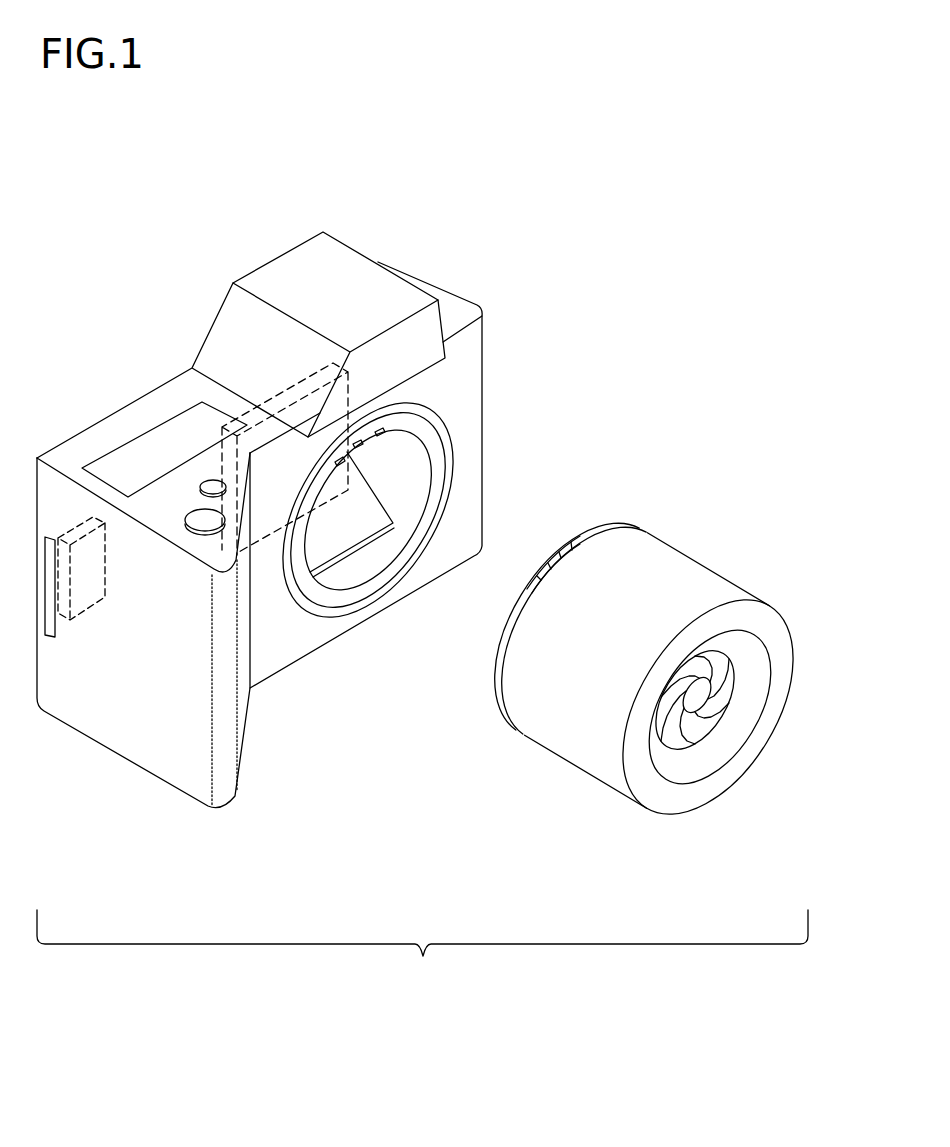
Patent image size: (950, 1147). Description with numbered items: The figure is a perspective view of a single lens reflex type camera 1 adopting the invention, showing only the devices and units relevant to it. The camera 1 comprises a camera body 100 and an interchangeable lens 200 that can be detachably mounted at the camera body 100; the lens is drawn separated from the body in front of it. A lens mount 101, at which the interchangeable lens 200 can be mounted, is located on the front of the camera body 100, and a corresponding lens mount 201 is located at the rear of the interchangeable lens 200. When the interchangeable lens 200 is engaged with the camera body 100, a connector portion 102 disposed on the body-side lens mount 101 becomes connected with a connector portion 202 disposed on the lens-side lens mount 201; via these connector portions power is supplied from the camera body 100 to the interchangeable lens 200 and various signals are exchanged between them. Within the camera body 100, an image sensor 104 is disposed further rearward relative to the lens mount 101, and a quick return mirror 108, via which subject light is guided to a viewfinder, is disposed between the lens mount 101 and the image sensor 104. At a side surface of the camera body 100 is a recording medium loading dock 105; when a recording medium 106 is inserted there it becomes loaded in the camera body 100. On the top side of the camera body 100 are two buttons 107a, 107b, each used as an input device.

The single lens reflex type camera 1 is at (422, 953).
The camera body 100 is at (437, 282).
The lens mount 101 is at (447, 432).
The connector portion 102 is at (404, 432).
The image sensor 104 is at (318, 383).
The recording medium loading dock 105 is at (57, 638).
The recording medium 106 is at (92, 605).
The mode dial 107a is at (198, 515).
The shutter release button 107b is at (212, 483).
The quick return mirror 108 is at (353, 550).
The interchangeable lens 200 is at (667, 542).
The lens mount 201 is at (505, 659).
The connector portion 202 is at (585, 526).